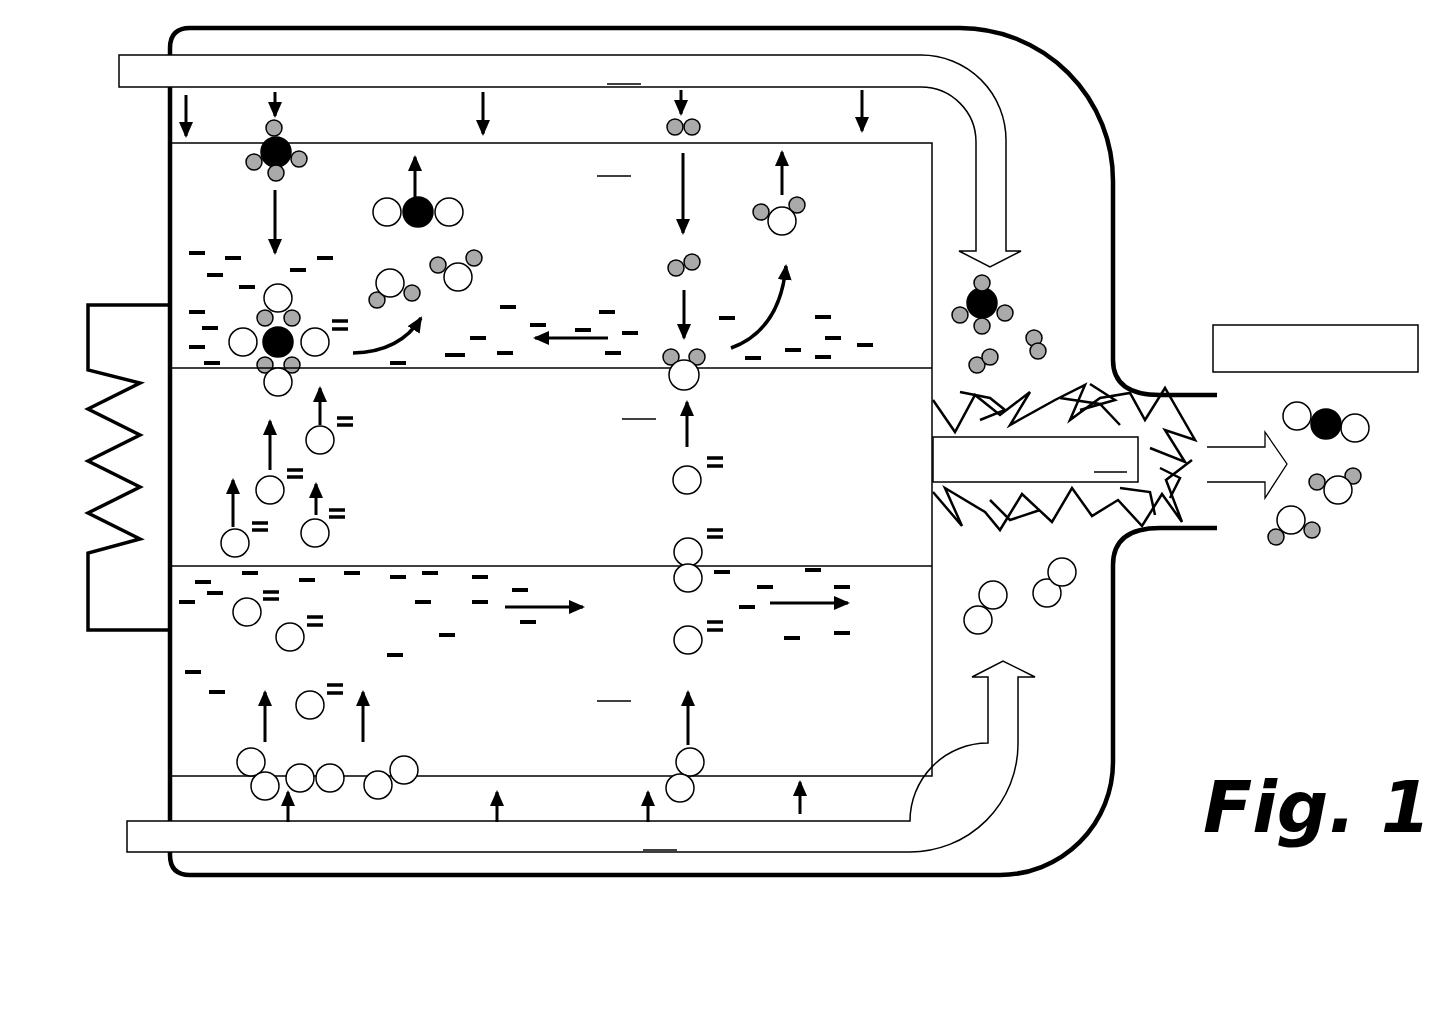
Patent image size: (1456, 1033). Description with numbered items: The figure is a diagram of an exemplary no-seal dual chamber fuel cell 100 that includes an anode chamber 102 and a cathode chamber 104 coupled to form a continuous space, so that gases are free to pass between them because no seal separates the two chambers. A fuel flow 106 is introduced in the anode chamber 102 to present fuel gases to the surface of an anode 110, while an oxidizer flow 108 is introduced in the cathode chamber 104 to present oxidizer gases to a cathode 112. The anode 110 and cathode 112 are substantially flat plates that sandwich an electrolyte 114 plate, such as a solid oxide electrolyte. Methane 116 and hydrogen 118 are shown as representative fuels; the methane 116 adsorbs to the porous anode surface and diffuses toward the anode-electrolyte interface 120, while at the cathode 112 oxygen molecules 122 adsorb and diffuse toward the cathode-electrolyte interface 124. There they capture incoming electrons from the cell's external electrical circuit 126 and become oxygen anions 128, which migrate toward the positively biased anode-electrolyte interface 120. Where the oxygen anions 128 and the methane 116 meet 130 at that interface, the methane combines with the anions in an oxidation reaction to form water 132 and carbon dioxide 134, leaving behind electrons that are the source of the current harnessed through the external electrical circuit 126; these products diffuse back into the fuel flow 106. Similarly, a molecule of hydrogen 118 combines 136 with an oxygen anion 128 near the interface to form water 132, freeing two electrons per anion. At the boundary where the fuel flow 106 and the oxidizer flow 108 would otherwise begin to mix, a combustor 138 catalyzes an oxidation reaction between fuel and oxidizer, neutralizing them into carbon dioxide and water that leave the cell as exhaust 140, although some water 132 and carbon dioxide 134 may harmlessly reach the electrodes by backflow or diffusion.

The no-seal dual chamber fuel cell 100 is at (1214, 160).
The anode chamber 102 is at (1022, 78).
The cathode chamber 104 is at (1080, 728).
The fuel flow 106 is at (570, 161).
The oxidizer flow 108 is at (581, 471).
The anode 110 is at (551, 258).
The cathode 112 is at (551, 671).
The electrolyte 114 is at (582, 467).
The methane 116 is at (350, 123).
The hydrogen 118 is at (735, 122).
The anode-electrolyte interface 120 is at (453, 373).
The oxygen molecules 122 is at (418, 761).
The cathode-electrolyte interface 124 is at (400, 565).
The external electrical circuit 126 is at (167, 303).
The oxygen anions 128 is at (362, 470).
The meeting of oxygen anions and methane 130 is at (261, 386).
The water 132 is at (491, 272).
The carbon dioxide 134 is at (476, 206).
The combination of hydrogen with oxygen anion 136 is at (702, 387).
The combustor 138 is at (1064, 402).
The exhaust 140 is at (1313, 325).